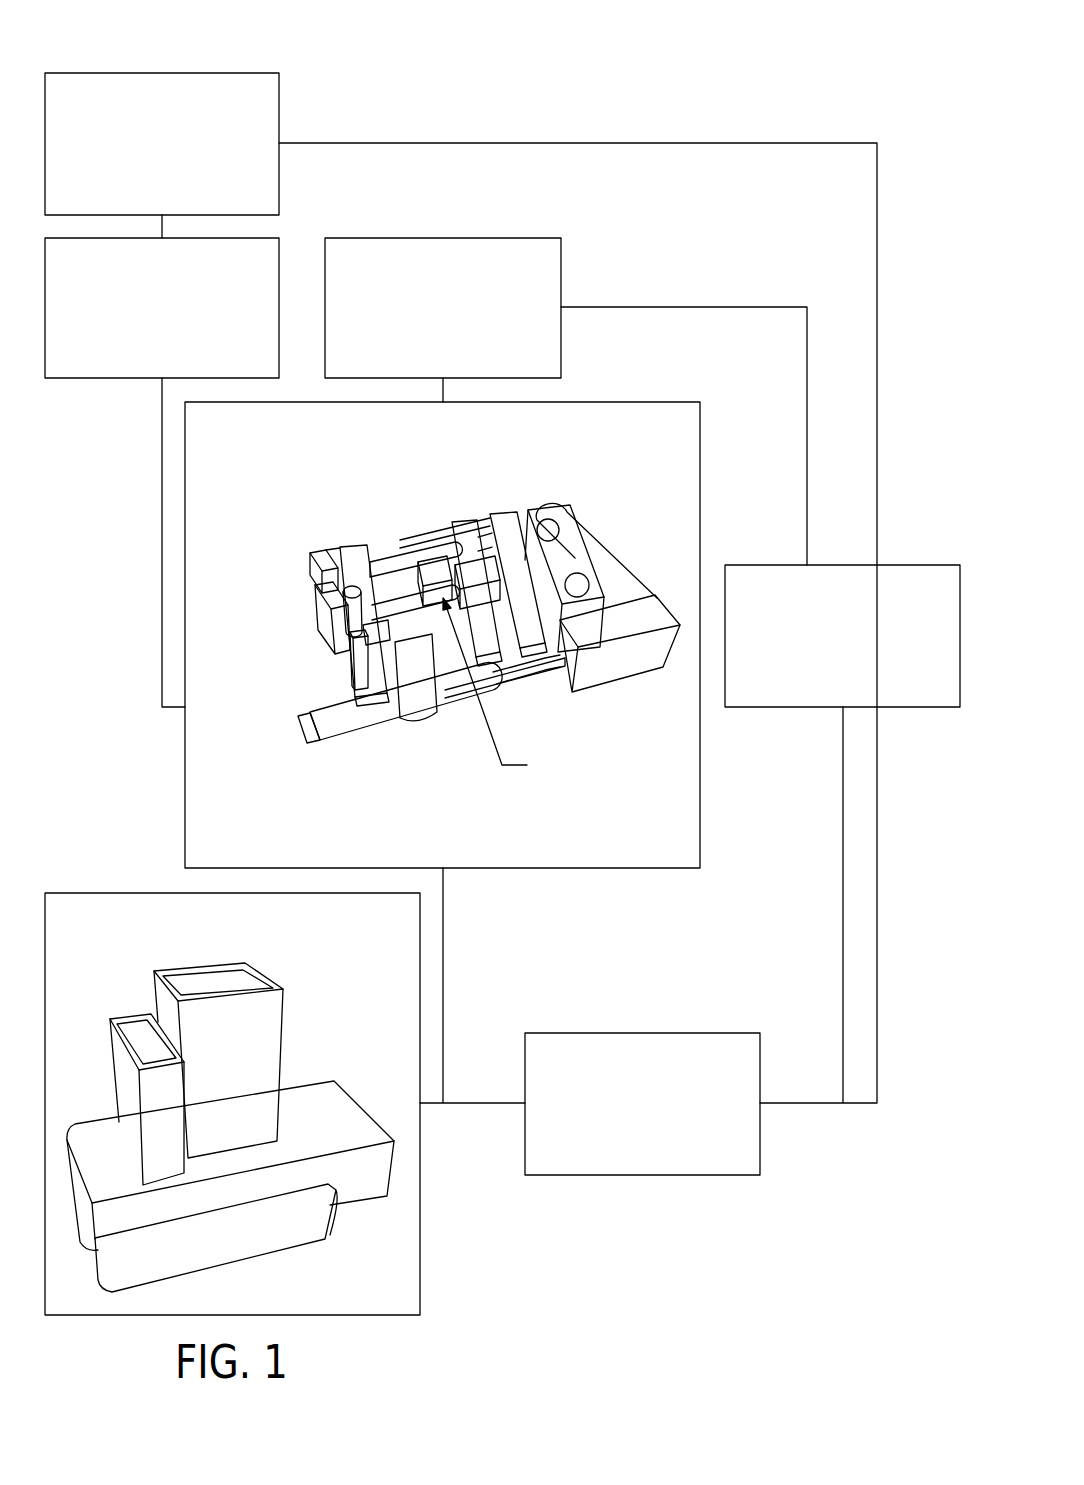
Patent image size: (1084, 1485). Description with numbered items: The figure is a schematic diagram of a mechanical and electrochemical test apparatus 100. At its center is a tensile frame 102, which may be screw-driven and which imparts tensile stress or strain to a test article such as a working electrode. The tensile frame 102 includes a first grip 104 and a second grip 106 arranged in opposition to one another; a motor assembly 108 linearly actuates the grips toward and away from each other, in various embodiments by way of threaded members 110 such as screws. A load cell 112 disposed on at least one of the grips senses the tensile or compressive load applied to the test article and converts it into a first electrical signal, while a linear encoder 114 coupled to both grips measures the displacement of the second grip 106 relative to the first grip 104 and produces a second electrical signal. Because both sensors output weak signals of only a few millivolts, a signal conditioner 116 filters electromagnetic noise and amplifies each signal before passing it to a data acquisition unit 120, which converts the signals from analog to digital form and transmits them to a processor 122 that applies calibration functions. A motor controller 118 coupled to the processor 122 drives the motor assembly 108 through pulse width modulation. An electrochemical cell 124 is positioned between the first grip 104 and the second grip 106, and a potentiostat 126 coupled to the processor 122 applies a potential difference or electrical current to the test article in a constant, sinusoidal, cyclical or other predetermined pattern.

The mechanical and electrochemical test apparatus 100 is at (722, 85).
The tensile frame 102 is at (628, 455).
The first grip 104 is at (437, 552).
The second grip 106 is at (373, 563).
The motor assembly 108 is at (620, 668).
The threaded members 110 is at (413, 558).
The load cell 112 is at (317, 598).
The linear encoder 114 is at (360, 723).
The signal conditioner 116 is at (183, 324).
The motor controller 118 is at (465, 324).
The data acquisition unit 120 is at (183, 161).
The processor 122 is at (863, 654).
The electrochemical cell 124 is at (320, 1006).
The potentiostat 126 is at (663, 1119).